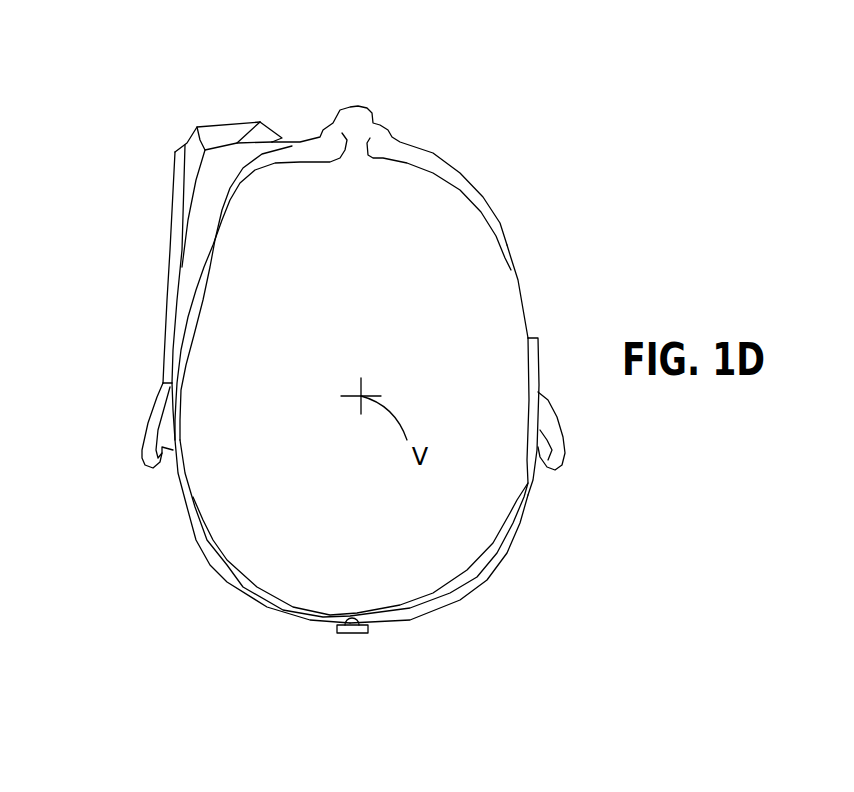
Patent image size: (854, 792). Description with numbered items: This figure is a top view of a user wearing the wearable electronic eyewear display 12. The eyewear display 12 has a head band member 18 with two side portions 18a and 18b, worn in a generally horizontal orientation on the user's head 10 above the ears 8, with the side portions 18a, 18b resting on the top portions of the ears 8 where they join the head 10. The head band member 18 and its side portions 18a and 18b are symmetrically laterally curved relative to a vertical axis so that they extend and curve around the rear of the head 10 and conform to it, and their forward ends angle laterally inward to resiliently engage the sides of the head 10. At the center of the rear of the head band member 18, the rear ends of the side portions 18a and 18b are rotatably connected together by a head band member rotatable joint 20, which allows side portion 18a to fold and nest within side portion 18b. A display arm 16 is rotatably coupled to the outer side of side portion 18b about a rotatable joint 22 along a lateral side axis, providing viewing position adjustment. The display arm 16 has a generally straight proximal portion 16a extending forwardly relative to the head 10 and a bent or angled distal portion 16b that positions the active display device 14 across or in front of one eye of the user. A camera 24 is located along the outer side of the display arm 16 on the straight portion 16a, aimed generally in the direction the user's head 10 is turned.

The ears 8 is at (145, 437).
The head 10 is at (500, 305).
The wearable electronic eyewear display 12 is at (148, 180).
The active display device 14 is at (270, 132).
The display arm 16 is at (173, 263).
The proximal portion 16a is at (165, 308).
The distal portion 16b is at (212, 123).
The head band member 18 is at (503, 557).
The side portion 18a is at (478, 585).
The side portion 18b is at (212, 568).
The head band member rotatable joint 20 is at (345, 633).
The rotatable joint 22 is at (163, 360).
The camera 24 is at (180, 150).